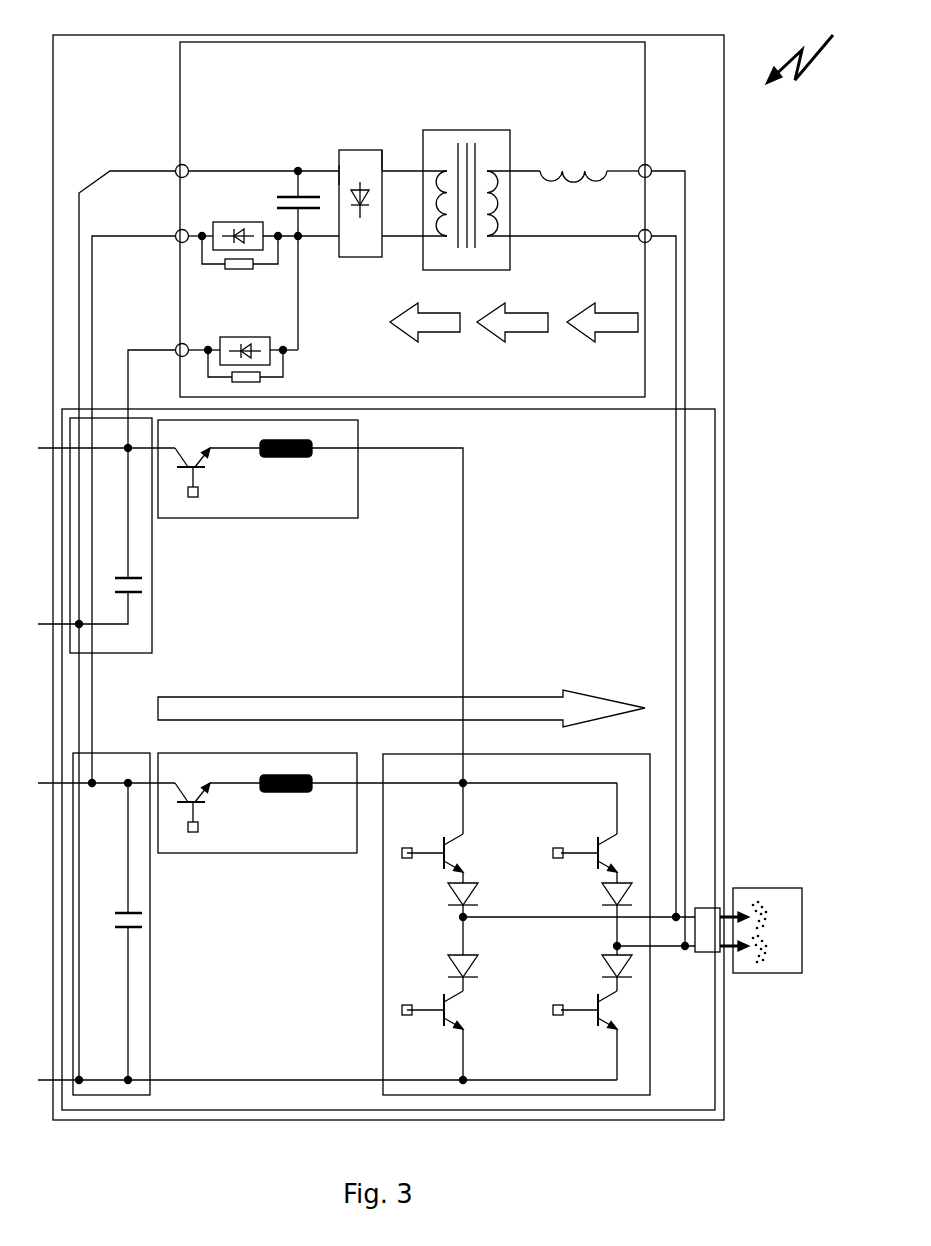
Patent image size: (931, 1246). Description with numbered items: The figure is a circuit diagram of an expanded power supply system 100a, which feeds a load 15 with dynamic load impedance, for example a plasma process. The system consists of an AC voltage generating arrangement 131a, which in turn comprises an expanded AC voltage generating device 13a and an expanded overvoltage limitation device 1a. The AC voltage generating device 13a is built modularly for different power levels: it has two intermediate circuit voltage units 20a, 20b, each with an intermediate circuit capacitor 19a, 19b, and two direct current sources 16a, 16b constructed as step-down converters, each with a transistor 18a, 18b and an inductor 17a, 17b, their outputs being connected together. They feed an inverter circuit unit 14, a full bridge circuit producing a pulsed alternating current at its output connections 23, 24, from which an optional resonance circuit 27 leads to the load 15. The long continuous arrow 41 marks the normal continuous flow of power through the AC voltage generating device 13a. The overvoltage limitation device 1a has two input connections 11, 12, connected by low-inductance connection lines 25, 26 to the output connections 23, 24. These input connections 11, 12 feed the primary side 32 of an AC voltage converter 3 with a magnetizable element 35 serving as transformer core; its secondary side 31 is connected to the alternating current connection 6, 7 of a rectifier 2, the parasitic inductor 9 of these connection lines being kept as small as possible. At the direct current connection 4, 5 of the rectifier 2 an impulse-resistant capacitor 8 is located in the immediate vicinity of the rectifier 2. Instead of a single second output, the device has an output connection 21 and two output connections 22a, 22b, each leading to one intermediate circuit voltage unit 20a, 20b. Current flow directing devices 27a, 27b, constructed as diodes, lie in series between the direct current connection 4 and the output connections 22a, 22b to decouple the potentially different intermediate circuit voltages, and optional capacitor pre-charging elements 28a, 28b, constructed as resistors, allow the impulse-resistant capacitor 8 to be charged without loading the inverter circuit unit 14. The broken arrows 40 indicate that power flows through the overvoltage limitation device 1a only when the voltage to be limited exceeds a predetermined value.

The expanded power supply system 100a is at (802, 46).
The expanded overvoltage limitation device 1a is at (645, 110).
The rectifier 2 is at (372, 150).
The AC voltage converter 3 is at (491, 165).
The direct current connection 4 is at (330, 172).
The direct current connection 5 is at (339, 177).
The alternating current connection 6 is at (385, 160).
The alternating current connection 7 is at (393, 172).
The impulse-resistant capacitor 8 is at (277, 197).
The inductor 9 is at (583, 172).
The first input connection 11 is at (652, 170).
The second input connection 12 is at (652, 235).
The expanded AC voltage generating device 13a is at (715, 740).
The AC voltage generating arrangement 131a is at (723, 487).
The inverter circuit unit 14 is at (383, 928).
The load 15 is at (735, 975).
The first direct current source 16a is at (258, 485).
The second direct current source 16b is at (257, 818).
The inductor 17a is at (267, 457).
The inductor 17b is at (267, 792).
The transistor 18a is at (230, 478).
The transistor 18b is at (230, 813).
The intermediate circuit capacitor 19a is at (142, 592).
The intermediate circuit capacitor 19b is at (142, 927).
The intermediate circuit voltage unit 20a is at (144, 556).
The intermediate circuit voltage unit 20b is at (162, 924).
The output connection 21 is at (176, 171).
The output connection 22a is at (176, 350).
The output connection 22b is at (176, 236).
The first output connection 23 is at (688, 950).
The second output connection 24 is at (680, 916).
The first connection line 25 is at (685, 262).
The second connection line 26 is at (676, 325).
The resonance circuit 27 is at (707, 908).
The current flow directing device 27a is at (270, 337).
The current flow directing device 27b is at (263, 250).
The capacitor pre-charging element 28a is at (260, 378).
The capacitor pre-charging element 28b is at (253, 266).
The secondary side 31 is at (447, 177).
The primary side 32 is at (487, 177).
The magnetizable element 35 is at (467, 248).
The arrows 40 is at (550, 323).
The arrow 41 is at (498, 697).